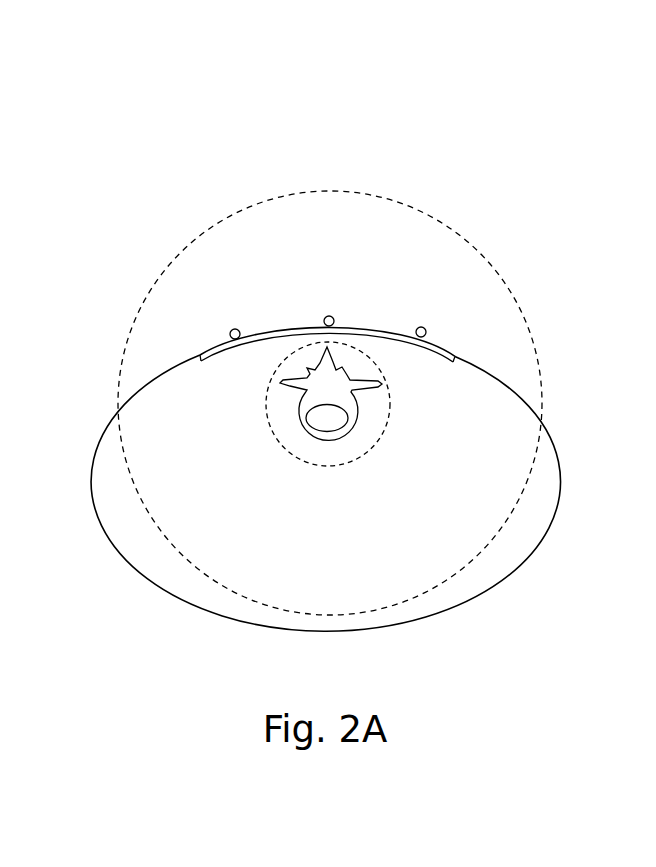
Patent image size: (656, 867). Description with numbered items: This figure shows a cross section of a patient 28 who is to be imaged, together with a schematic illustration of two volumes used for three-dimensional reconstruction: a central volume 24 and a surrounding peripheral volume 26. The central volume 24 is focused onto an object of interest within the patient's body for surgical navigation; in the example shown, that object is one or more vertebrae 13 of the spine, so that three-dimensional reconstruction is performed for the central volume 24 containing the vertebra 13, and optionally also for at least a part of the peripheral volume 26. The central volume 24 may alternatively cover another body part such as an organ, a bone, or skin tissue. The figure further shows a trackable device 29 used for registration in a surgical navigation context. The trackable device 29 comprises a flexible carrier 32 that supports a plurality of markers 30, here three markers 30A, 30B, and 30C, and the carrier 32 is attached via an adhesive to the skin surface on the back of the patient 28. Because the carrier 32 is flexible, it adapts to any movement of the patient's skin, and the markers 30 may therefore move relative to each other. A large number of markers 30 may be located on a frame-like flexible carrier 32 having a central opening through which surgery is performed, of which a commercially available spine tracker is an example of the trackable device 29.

The vertebra 13 is at (237, 543).
The central volume 24 is at (457, 490).
The peripheral volume 26 is at (381, 403).
The patient 28 is at (300, 493).
The trackable device 29 is at (262, 260).
The markers 30 is at (315, 110).
The marker 30A is at (252, 228).
The marker 30B is at (310, 222).
The marker 30C is at (385, 229).
The flexible carrier 32 is at (489, 259).